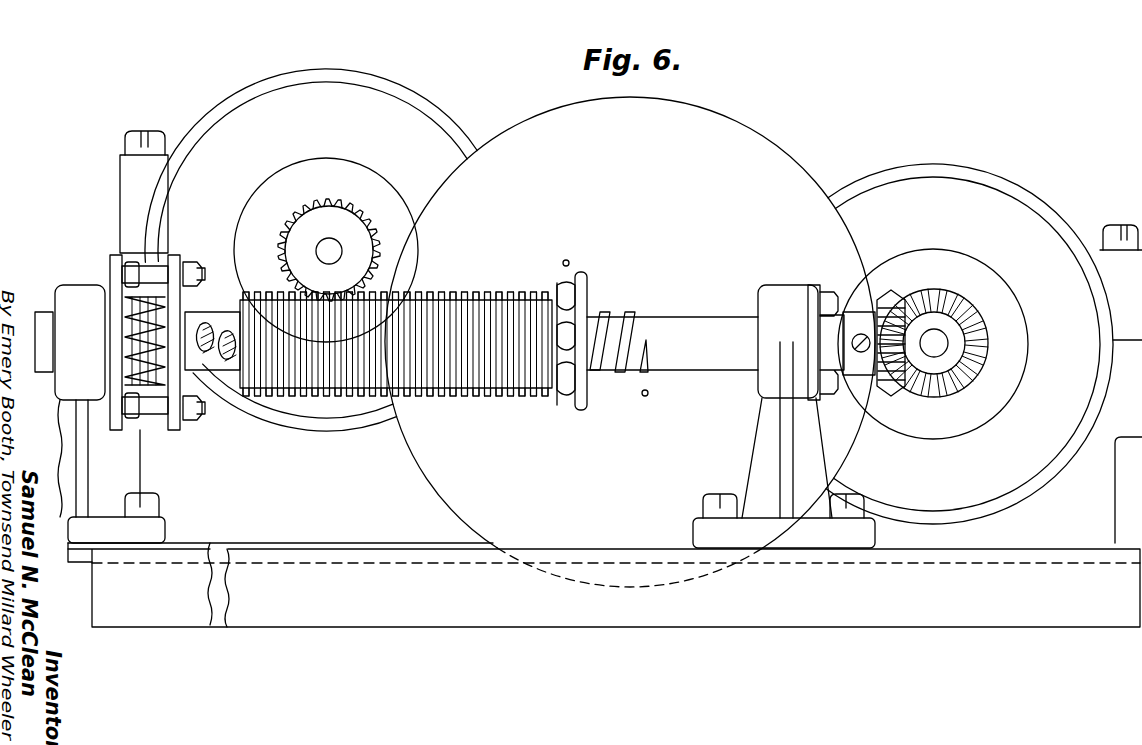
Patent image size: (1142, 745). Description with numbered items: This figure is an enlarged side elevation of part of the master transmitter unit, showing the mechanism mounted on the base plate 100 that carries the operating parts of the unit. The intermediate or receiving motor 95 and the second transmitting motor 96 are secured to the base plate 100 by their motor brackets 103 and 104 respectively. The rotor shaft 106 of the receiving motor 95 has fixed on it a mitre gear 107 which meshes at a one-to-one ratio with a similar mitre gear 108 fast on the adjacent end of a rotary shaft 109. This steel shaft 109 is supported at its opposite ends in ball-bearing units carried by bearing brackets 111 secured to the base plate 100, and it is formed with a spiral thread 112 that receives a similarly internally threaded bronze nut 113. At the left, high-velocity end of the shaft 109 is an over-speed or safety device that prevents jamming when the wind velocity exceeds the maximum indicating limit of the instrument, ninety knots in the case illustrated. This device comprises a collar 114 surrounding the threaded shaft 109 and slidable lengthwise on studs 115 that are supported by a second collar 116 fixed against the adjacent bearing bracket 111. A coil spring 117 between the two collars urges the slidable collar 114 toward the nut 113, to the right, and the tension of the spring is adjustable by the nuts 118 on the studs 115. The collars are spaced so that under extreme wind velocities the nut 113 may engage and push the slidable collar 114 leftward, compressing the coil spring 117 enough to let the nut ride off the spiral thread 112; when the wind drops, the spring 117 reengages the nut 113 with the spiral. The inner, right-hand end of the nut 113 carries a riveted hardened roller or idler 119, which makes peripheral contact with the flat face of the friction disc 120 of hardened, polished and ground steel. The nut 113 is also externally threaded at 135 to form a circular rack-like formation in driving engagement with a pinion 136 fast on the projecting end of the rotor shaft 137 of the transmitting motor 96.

The intermediate or receiving motor 95 is at (1005, 196).
The second transmitting motor 96 is at (368, 95).
The base plate 100 is at (322, 548).
The motor bracket 103 is at (1100, 250).
The motor bracket 104 is at (126, 180).
The rotor shaft 106 is at (937, 340).
The mitre gear 107 is at (948, 386).
The mitre gear 108 is at (893, 300).
The rotary shaft 109 is at (698, 358).
The bearing bracket 111 is at (97, 527).
The spiral thread 112 is at (605, 322).
The nut 113 is at (548, 386).
The collar 114 is at (180, 305).
The stud 115 is at (162, 266).
The second collar 116 is at (110, 268).
The coil spring 117 is at (126, 338).
The nut 118 is at (196, 262).
The hardened roller or idler 119 is at (578, 282).
The friction disc 120 is at (742, 130).
The external thread 135 is at (352, 383).
The pinion 136 is at (341, 214).
The rotor shaft 137 is at (335, 252).